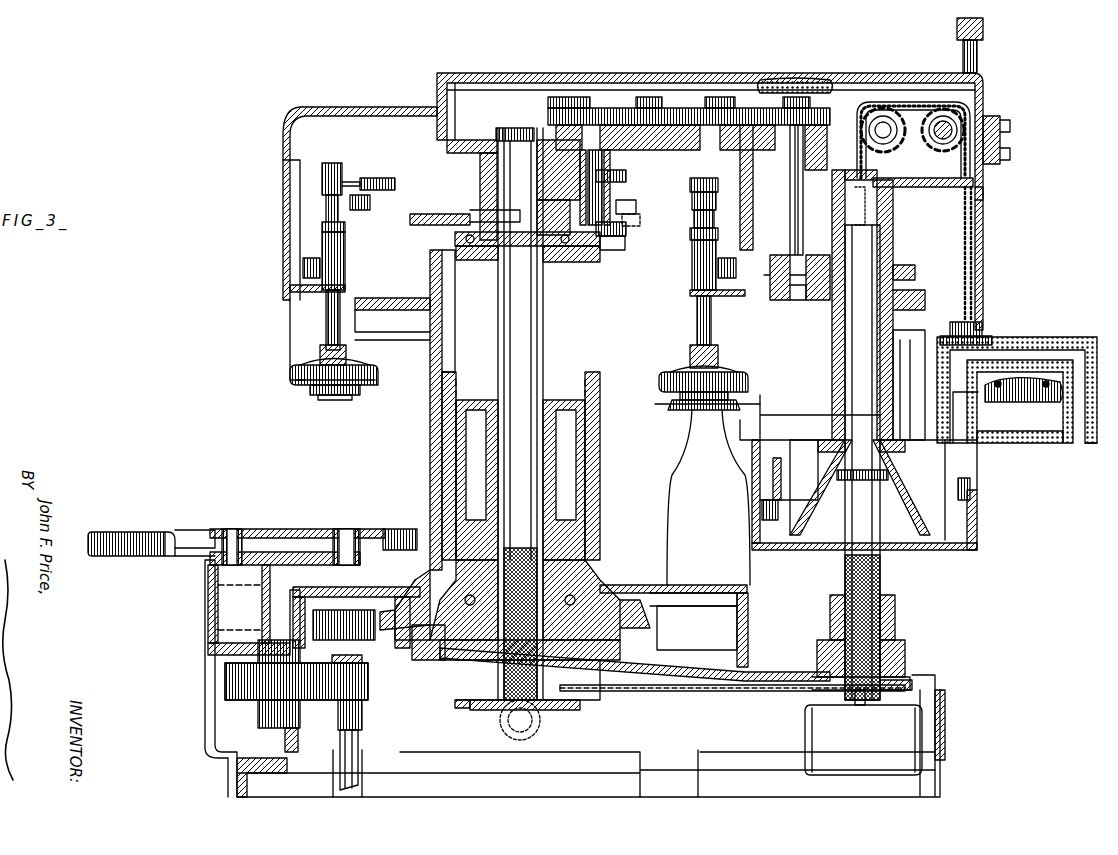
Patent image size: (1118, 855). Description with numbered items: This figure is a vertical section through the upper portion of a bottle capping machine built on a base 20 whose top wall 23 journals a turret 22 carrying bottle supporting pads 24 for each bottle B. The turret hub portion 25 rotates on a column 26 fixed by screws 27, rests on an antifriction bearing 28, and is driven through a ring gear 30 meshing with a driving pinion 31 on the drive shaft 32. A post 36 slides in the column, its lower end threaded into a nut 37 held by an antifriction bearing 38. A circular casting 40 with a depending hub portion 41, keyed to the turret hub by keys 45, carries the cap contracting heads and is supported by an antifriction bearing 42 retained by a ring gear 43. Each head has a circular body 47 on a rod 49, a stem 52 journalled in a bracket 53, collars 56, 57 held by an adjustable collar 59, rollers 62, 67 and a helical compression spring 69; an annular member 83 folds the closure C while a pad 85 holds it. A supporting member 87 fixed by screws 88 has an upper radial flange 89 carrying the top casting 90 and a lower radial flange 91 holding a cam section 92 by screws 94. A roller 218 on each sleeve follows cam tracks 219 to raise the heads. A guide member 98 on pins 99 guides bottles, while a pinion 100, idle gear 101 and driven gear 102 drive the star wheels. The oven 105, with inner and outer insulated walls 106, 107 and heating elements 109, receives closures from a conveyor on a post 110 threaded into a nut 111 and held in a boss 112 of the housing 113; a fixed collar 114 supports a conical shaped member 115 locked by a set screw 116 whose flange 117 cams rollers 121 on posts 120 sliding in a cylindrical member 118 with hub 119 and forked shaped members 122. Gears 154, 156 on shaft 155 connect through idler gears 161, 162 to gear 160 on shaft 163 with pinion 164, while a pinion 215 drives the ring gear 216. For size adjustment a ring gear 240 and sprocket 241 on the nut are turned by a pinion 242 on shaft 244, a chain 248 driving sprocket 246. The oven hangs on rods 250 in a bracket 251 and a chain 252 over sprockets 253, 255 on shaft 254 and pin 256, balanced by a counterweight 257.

The base 20 is at (236, 770).
The turret 22 is at (748, 604).
The top wall 23 is at (745, 665).
The bottle supporting pads 24 is at (748, 586).
The hub portion 25 is at (590, 498).
The column 26 is at (548, 520).
The screws 27 is at (583, 608).
The antifriction bearing 28 is at (515, 600).
The ring gear 30 is at (663, 630).
The driving pinion 31 is at (330, 610).
The drive shaft 32 is at (362, 720).
The post 36 is at (541, 358).
The nut 37 is at (460, 672).
The antifriction bearing 38 is at (585, 660).
The circular casting 40 is at (380, 300).
The hub portion 41 is at (430, 405).
The antifriction bearing 42 is at (560, 265).
The ring gear 43 is at (455, 236).
The keys 45 is at (443, 470).
The circular body 47 is at (368, 366).
The rod 49 is at (713, 330).
The stem 52 is at (333, 328).
The bracket 53 is at (347, 250).
The collar 56 is at (716, 204).
The collar 57 is at (716, 190).
The adjustable collar 59 is at (690, 184).
The roller 62 is at (325, 198).
The roller 67 is at (370, 199).
The helical compression spring 69 is at (396, 184).
The annular member 83 is at (310, 392).
The pad 85 is at (340, 400).
The supporting member 87 is at (485, 190).
The screws 88 is at (502, 138).
The upper radial flange 89 is at (462, 160).
The top casting 90 is at (437, 128).
The lower radial flange 91 is at (425, 214).
The cam section 92 is at (665, 220).
The screws 94 is at (634, 206).
The guide member 98 is at (148, 540).
The pins 99 is at (232, 530).
The pinion 100 is at (368, 698).
The idle gear 101 is at (308, 704).
The driven gear 102 is at (210, 700).
The oven 105 is at (1013, 337).
The inner insulated wall 106 is at (1040, 358).
The outer insulated wall 107 is at (1066, 336).
The heating elements 109 is at (1024, 398).
The post 110 is at (875, 520).
The nut 111 is at (898, 640).
The boss 112 is at (895, 236).
The housing 113 is at (979, 186).
The fixed collar 114 is at (830, 480).
The conical shaped member 115 is at (902, 470).
The set screw 116 is at (885, 456).
The flange 117 is at (978, 518).
The cylindrical member 118 is at (775, 478).
The hub 119 is at (888, 386).
The posts 120 is at (765, 420).
The roller 121 is at (772, 505).
The forked shaped member 122 is at (688, 412).
The gear 154 is at (805, 88).
The shaft 155 is at (795, 210).
The gear 156 is at (840, 97).
The gear 160 is at (565, 97).
The idler gear 161 is at (640, 108).
The idler gear 162 is at (712, 105).
The shaft 163 is at (612, 185).
The pinion 164 is at (628, 244).
The pinion 215 is at (797, 292).
The ring gear 216 is at (918, 290).
The roller 218 is at (308, 258).
The cam tracks 219 is at (307, 294).
The ring gear 240 is at (582, 705).
The sprocket 241 is at (460, 705).
The pinion 242 is at (540, 728).
The shaft 244 is at (509, 722).
The sprocket 246 is at (895, 692).
The chain 248 is at (700, 692).
The rods 250 is at (978, 60).
The bracket 251 is at (1000, 142).
The chain 252 is at (974, 230).
The sprocket 253 is at (941, 144).
The shaft 254 is at (930, 142).
The sprocket 255 is at (880, 142).
The pin 256 is at (895, 106).
The counterweight 257 is at (863, 732).
The bottle B is at (667, 500).
The closure C is at (670, 404).